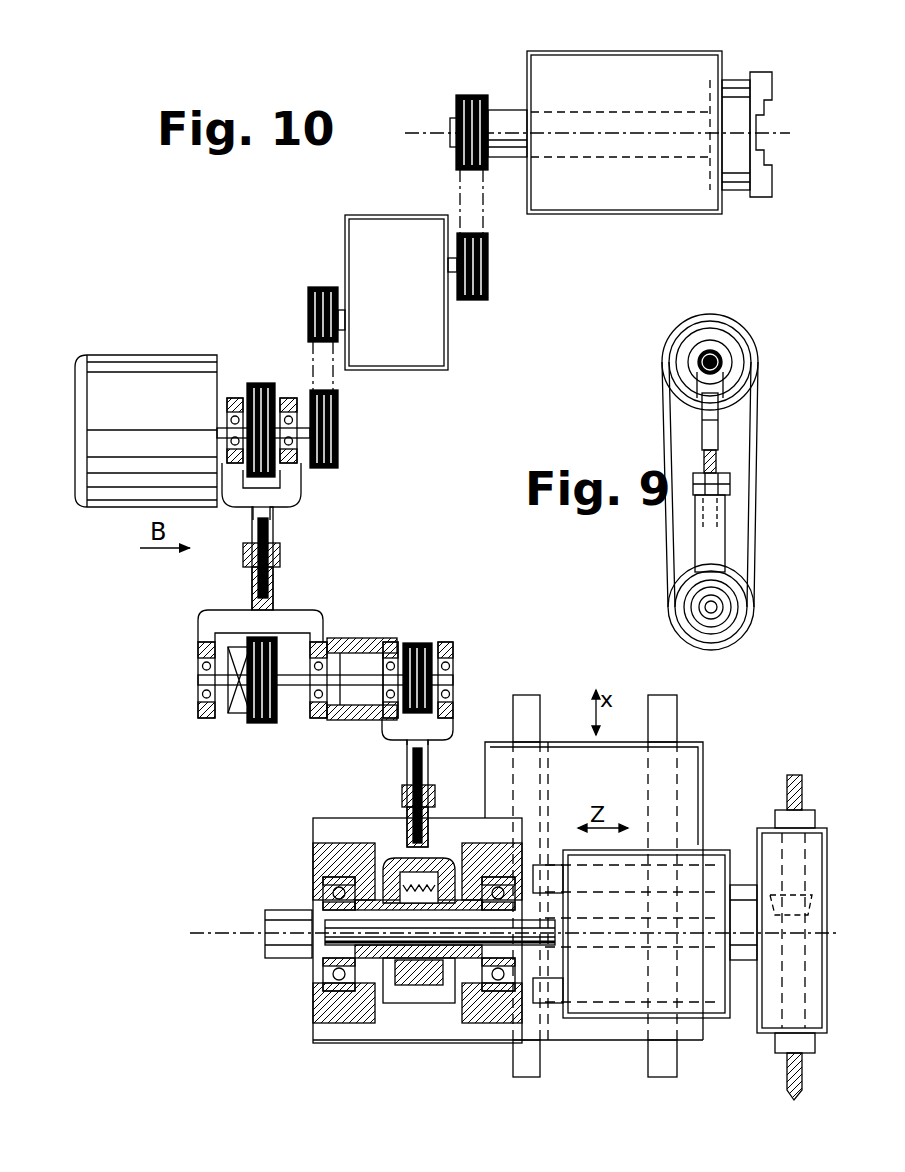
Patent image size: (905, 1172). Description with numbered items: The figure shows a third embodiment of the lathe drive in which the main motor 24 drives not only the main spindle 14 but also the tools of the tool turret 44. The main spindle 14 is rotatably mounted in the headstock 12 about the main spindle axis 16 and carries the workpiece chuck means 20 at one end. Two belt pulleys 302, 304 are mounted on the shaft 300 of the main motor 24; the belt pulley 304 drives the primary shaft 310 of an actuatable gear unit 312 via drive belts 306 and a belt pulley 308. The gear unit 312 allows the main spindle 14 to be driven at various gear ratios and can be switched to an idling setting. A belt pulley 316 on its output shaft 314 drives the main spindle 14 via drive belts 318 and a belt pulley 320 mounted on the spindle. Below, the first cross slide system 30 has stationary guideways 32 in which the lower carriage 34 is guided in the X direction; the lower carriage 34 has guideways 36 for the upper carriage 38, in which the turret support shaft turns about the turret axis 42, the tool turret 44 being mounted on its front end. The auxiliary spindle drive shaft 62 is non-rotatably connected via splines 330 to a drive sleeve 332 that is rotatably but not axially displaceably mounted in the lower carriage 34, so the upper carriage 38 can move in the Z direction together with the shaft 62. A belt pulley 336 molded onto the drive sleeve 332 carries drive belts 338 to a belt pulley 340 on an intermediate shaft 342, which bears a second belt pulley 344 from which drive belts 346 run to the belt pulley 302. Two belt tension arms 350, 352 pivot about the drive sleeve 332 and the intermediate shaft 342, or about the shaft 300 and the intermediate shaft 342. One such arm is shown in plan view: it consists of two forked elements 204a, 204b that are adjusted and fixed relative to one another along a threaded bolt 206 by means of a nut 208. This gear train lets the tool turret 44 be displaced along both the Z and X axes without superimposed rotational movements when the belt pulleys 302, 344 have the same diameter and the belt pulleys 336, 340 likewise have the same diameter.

In FIG. 10, the headstock 12 is at (590, 205).
In FIG. 10, the main spindle 14 is at (645, 148).
In FIG. 10, the main spindle axis 16 is at (772, 133).
In FIG. 10, the workpiece chuck means 20 is at (760, 57).
In FIG. 10, the main motor 24 is at (140, 390).
In FIG. 10, the first cross slide system 30 is at (645, 1042).
In FIG. 10, the stationary guideways 32 is at (526, 1065).
In FIG. 10, the lower carriage 34 is at (693, 787).
In FIG. 10, the guideways 36 is at (552, 992).
In FIG. 10, the upper carriage 38 is at (705, 965).
In FIG. 10, the turret axis 42 is at (220, 933).
In FIG. 10, the tool turret 44 is at (815, 790).
In FIG. 10, the auxiliary spindle drive shaft 62 is at (556, 930).
In FIG. 9, the forked element 204a is at (722, 545).
In FIG. 9, the forked element 204b is at (718, 420).
In FIG. 9, the threaded bolt 206 is at (718, 462).
In FIG. 9, the nut 208 is at (730, 490).
In FIG. 10, the shaft 300 is at (233, 395).
In FIG. 9, the shaft 300 is at (720, 362).
In FIG. 10, the belt pulley 302 is at (262, 383).
In FIG. 9, the belt pulley 302 is at (735, 335).
In FIG. 10, the belt pulley 304 is at (340, 437).
In FIG. 10, the drive belts 306 is at (336, 374).
In FIG. 10, the belt pulley 308 is at (310, 300).
In FIG. 10, the primary shaft 310 is at (340, 290).
In FIG. 10, the actuatable gear unit 312 is at (410, 268).
In FIG. 10, the output shaft 314 is at (453, 276).
In FIG. 10, the belt pulley 316 is at (490, 268).
In FIG. 10, the drive belts 318 is at (467, 203).
In FIG. 10, the belt pulley 320 is at (458, 118).
In FIG. 10, the splines 330 is at (432, 960).
In FIG. 10, the drive sleeve 332 is at (292, 958).
In FIG. 10, the belt pulley 336 is at (396, 986).
In FIG. 10, the drive belts 338 is at (407, 777).
In FIG. 10, the belt pulley 340 is at (425, 640).
In FIG. 10, the intermediate shaft 342 is at (297, 686).
In FIG. 9, the intermediate shaft 342 is at (720, 607).
In FIG. 10, the second belt pulley 344 is at (243, 713).
In FIG. 9, the second belt pulley 344 is at (752, 622).
In FIG. 10, the drive belts 346 is at (276, 547).
In FIG. 9, the drive belts 346 is at (756, 418).
In FIG. 10, the belt tension arm 350 is at (442, 760).
In FIG. 10, the belt tension arm 352 is at (238, 569).
In FIG. 9, the belt tension arm 352 is at (698, 437).